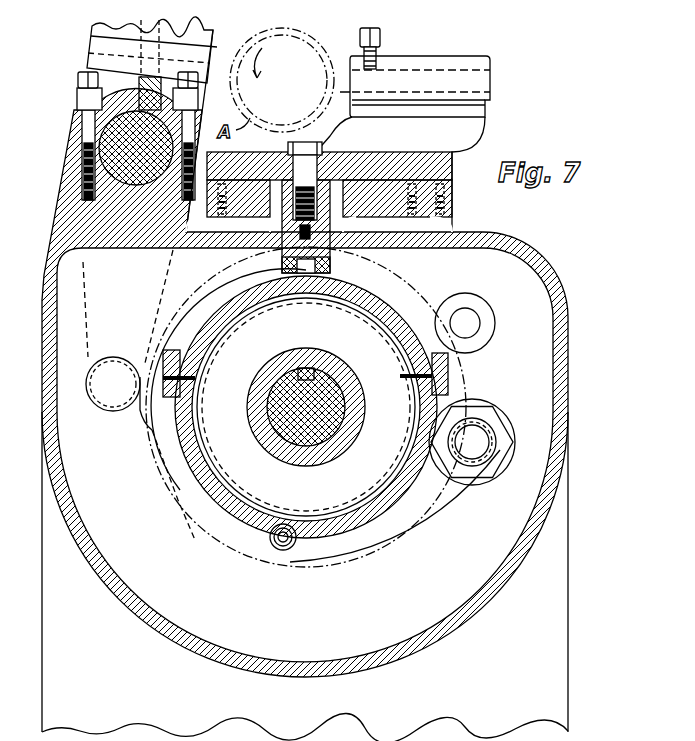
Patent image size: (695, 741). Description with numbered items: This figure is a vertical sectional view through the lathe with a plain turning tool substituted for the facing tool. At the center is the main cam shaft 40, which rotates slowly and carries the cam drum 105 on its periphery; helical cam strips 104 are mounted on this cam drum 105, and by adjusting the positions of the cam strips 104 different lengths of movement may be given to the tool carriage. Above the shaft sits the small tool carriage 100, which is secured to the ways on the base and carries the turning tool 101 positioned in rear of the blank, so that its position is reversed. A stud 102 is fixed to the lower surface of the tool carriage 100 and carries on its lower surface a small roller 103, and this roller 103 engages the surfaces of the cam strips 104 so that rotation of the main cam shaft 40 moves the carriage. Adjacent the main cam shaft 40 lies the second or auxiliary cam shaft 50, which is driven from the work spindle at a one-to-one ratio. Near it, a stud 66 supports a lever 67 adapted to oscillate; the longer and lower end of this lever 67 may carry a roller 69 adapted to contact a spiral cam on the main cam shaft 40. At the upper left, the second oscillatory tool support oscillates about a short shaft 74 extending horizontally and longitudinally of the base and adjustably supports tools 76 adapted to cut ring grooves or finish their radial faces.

The tools 76 is at (92, 43).
The short shaft 74 is at (112, 141).
The tool 101 is at (347, 77).
The tool carriage 100 is at (452, 147).
The roller 103 is at (282, 268).
The stud 102 is at (330, 238).
The helical cam strips 104 is at (400, 303).
The second cam shaft 50 is at (480, 327).
The main cam shaft 40 is at (340, 398).
The stud 66 is at (473, 457).
The lever 67 is at (433, 527).
The cam drum 105 is at (233, 470).
The roller 69 is at (277, 552).